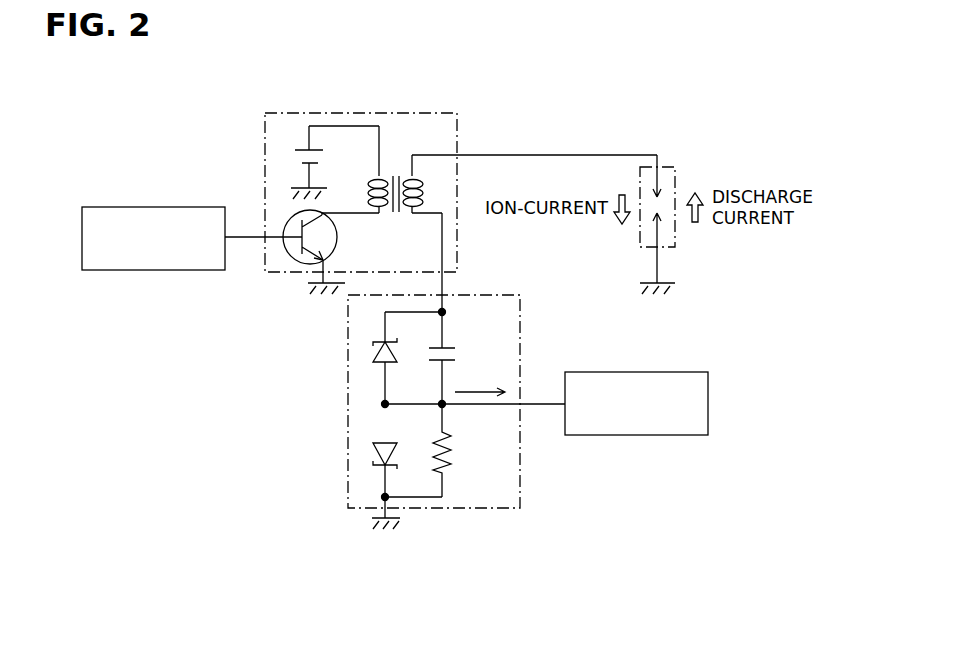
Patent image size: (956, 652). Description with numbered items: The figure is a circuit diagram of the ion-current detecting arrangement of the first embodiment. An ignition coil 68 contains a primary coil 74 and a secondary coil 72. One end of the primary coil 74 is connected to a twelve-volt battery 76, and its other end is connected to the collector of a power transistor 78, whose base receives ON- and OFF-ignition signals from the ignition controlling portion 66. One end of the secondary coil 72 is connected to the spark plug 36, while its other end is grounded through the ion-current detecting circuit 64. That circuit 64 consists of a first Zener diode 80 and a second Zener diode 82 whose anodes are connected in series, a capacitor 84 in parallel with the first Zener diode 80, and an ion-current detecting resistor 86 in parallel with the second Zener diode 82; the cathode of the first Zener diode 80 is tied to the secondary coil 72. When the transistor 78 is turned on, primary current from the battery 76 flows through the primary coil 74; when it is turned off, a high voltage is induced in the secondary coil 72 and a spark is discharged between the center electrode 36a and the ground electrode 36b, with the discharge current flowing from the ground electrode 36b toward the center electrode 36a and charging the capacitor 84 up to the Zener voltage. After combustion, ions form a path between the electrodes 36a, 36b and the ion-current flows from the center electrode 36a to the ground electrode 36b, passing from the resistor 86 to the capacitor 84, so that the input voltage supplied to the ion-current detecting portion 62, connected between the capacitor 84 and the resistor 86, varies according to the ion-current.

The spark plug 36 is at (696, 195).
The center electrode 36a is at (676, 180).
The ground electrode 36b is at (676, 240).
The ion-current detecting portion 62 is at (660, 372).
The ion-current detecting circuit 64 is at (521, 346).
The ignition controlling portion 66 is at (185, 206).
The ignition coil 68 is at (440, 113).
The secondary coil 72 is at (424, 190).
The primary coil 74 is at (370, 190).
The battery 76 is at (300, 150).
The power transistor 78 is at (296, 263).
The first Zener diode 80 is at (372, 350).
The second Zener diode 82 is at (372, 453).
The capacitor 84 is at (451, 346).
The ion-current detecting resistor 86 is at (452, 456).